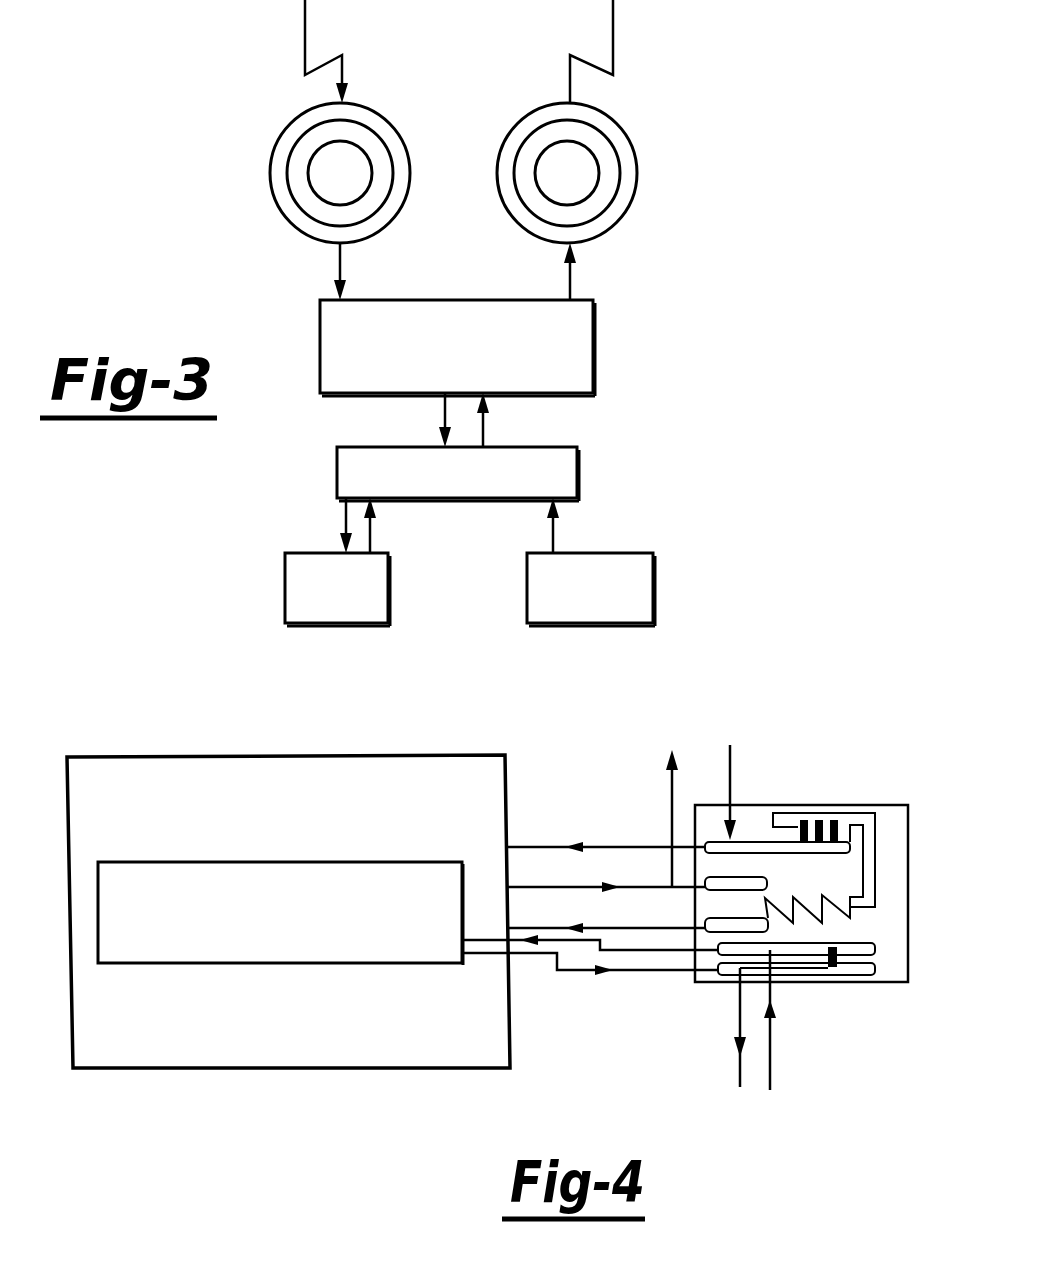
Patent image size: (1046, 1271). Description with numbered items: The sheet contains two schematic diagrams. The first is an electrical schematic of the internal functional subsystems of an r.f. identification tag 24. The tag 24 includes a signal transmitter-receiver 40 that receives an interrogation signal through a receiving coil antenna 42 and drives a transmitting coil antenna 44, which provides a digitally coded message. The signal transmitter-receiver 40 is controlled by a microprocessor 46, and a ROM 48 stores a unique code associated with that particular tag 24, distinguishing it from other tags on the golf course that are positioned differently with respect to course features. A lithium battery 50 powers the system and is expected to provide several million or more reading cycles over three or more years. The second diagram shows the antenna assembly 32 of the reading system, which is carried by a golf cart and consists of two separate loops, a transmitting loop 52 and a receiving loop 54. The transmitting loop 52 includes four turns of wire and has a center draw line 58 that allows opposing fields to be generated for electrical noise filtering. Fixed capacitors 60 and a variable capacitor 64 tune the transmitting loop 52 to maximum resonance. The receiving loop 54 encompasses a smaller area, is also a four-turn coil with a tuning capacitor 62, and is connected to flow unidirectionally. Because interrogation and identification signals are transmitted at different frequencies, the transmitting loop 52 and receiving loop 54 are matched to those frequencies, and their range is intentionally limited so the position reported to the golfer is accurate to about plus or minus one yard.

In FIG. 3, the tag 24 is at (670, 394).
In FIG. 3, the signal transmitter-receiver 40 is at (593, 345).
In FIG. 3, the receiving coil antenna 42 is at (285, 132).
In FIG. 3, the transmitting coil antenna 44 is at (630, 137).
In FIG. 3, the microprocessor 46 is at (577, 478).
In FIG. 3, the ROM 48 is at (285, 595).
In FIG. 3, the lithium battery 50 is at (653, 597).
In FIG. 4, the antenna assembly 32 is at (452, 1080).
In FIG. 4, the transmitting loop 52 is at (210, 1070).
In FIG. 4, the receiving loop 54 is at (397, 963).
In FIG. 4, the center draw line 58 is at (563, 887).
In FIG. 4, the fixed capacitors 60 is at (788, 822).
In FIG. 4, the tuning capacitor 62 is at (845, 960).
In FIG. 4, the variable capacitor 64 is at (808, 915).